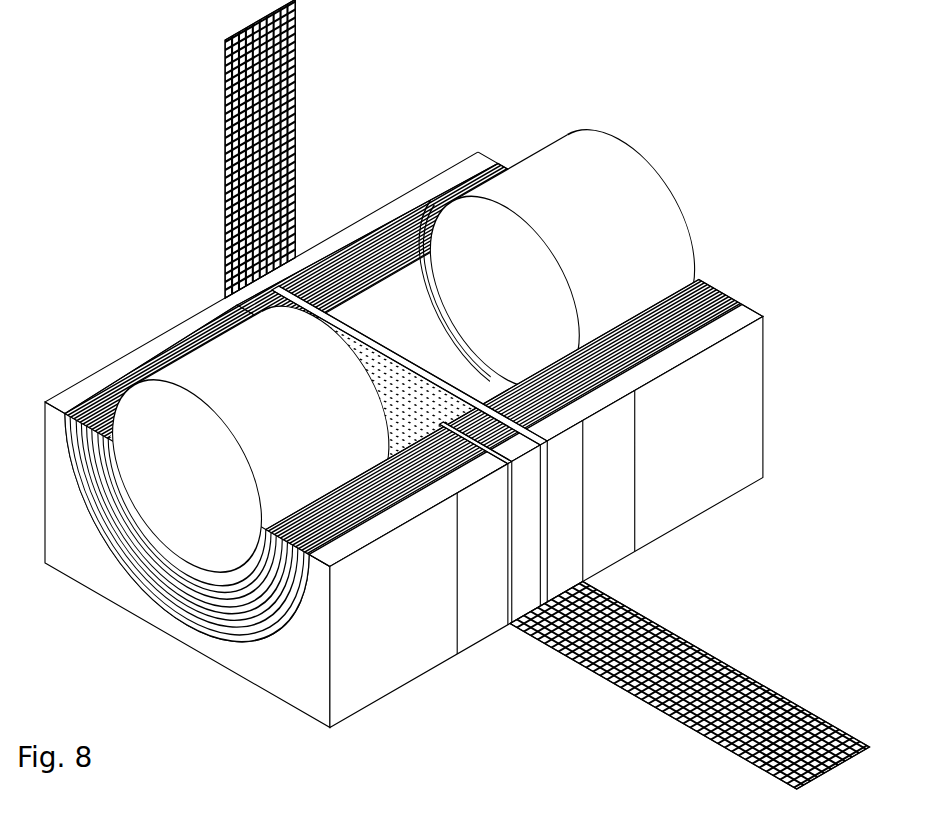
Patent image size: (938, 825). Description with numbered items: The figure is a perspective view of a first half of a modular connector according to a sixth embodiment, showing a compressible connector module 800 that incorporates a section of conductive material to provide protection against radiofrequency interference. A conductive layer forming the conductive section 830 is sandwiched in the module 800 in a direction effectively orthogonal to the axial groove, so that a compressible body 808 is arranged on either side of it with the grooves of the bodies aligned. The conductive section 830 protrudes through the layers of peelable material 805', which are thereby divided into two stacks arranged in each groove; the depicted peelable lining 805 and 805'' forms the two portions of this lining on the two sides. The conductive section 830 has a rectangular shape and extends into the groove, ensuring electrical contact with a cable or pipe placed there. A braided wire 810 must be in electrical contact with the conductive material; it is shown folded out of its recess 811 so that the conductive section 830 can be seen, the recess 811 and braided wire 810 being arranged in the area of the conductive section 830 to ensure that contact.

The connector module 800 is at (181, 136).
The optical fiber ribbon 805 is at (183, 500).
The layers of peelable material 805' is at (389, 247).
The optical fiber ribbon front portion 805'' is at (515, 380).
The compressible body 808 is at (637, 522).
The braided wire 810 is at (294, 55).
The recess 811 is at (580, 541).
The conductive section 830 is at (517, 634).